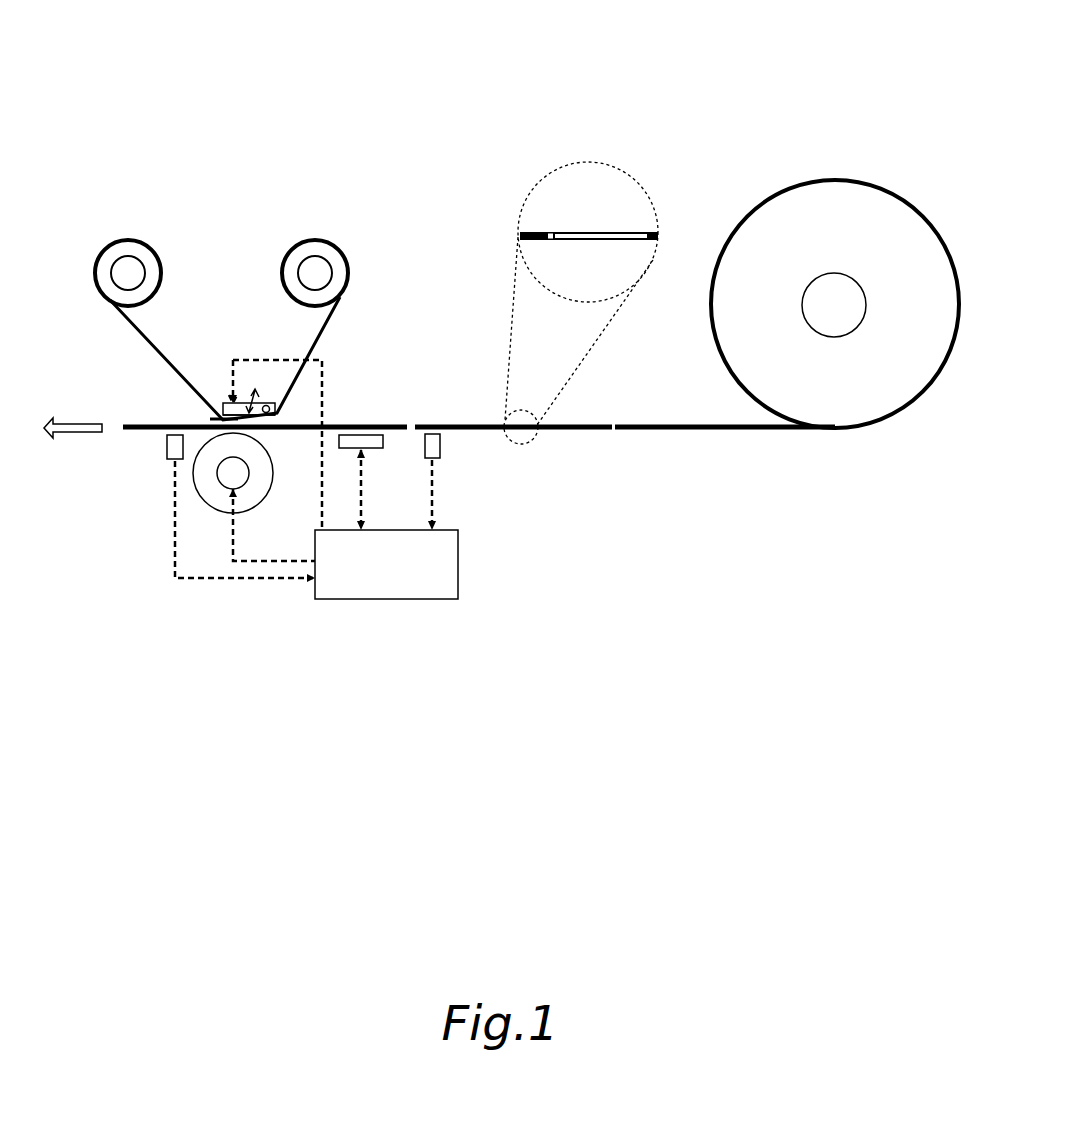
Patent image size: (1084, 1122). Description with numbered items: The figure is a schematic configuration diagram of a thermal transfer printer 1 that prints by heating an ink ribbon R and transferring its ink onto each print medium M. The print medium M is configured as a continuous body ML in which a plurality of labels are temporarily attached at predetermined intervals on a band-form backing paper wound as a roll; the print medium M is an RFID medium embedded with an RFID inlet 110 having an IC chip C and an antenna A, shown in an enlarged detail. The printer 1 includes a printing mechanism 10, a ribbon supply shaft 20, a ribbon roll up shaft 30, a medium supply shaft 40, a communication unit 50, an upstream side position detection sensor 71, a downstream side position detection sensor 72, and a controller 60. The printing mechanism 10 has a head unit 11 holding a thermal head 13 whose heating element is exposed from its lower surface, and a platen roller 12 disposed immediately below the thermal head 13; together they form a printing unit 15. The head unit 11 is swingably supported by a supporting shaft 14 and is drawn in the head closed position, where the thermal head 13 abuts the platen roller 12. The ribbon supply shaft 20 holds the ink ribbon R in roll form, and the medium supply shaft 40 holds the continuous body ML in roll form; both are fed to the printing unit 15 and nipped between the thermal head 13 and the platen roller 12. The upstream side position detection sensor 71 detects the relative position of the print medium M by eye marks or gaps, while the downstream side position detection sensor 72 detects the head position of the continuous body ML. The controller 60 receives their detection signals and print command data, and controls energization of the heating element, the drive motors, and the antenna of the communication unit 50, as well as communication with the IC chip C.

The printer 1 is at (568, 112).
The printing mechanism 10 is at (162, 524).
The head unit 11 is at (228, 402).
The platen roller 12 is at (247, 512).
The thermal head 13 is at (225, 415).
The supporting shaft 14 is at (268, 401).
The printing unit 15 is at (200, 408).
The ribbon supply shaft 20 is at (315, 258).
The ribbon roll up shaft 30 is at (128, 258).
The medium supply shaft 40 is at (853, 273).
The communication unit 50 is at (378, 450).
The controller 60 is at (382, 602).
The upstream side position detection sensor 71 is at (442, 457).
The downstream side position detection sensor 72 is at (165, 443).
The RFID inlet 110 is at (589, 280).
The print medium M is at (502, 423).
The continuous body ML is at (857, 455).
The ink ribbon R is at (330, 322).
The IC chip C is at (555, 232).
The antenna A is at (602, 232).